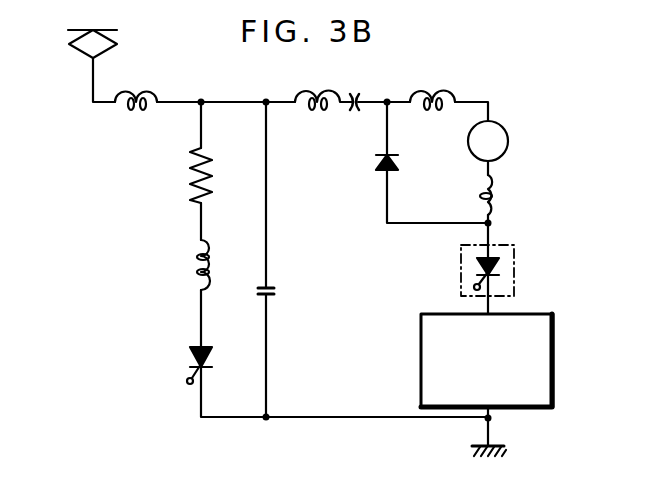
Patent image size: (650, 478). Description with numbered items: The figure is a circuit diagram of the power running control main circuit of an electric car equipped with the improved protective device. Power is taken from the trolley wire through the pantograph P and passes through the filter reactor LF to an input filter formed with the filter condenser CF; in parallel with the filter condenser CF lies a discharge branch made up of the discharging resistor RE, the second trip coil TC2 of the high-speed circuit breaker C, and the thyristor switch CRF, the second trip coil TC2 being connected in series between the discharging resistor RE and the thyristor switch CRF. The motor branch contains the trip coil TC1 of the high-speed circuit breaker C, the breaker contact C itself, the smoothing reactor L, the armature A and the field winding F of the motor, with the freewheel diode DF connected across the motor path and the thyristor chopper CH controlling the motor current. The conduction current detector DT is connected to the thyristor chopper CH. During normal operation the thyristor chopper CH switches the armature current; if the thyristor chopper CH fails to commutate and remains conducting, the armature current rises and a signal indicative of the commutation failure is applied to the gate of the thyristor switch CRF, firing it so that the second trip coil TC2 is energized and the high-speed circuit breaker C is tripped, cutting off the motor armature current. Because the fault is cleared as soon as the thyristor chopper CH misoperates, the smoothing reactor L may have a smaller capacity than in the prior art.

The pantograph P is at (62, 44).
The filter reactor LF is at (136, 88).
The discharging resistor RE is at (183, 178).
The second trip coil TC2 is at (192, 265).
The thyristor switch CRF is at (187, 355).
The filter condenser CF is at (280, 292).
The trip coil TC1 is at (341, 112).
The high-speed circuit breaker C is at (350, 90).
The smoothing reactor L is at (434, 92).
The armature A is at (512, 141).
The field winding F is at (505, 200).
The freewheel diode DF is at (398, 167).
The thyristor chopper CH is at (518, 265).
The conduction current detector DT is at (560, 358).